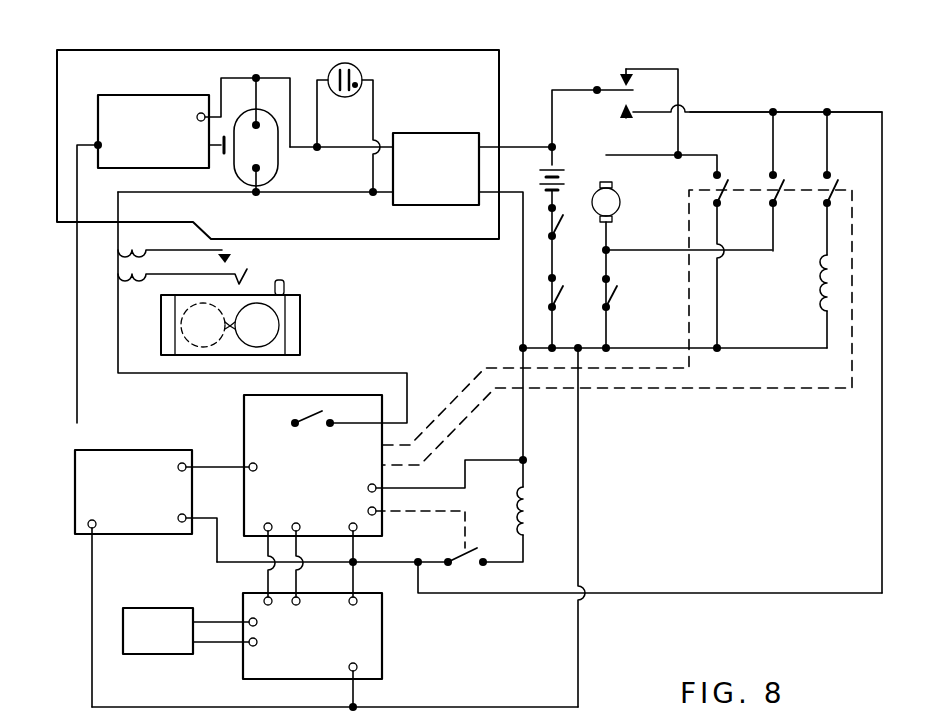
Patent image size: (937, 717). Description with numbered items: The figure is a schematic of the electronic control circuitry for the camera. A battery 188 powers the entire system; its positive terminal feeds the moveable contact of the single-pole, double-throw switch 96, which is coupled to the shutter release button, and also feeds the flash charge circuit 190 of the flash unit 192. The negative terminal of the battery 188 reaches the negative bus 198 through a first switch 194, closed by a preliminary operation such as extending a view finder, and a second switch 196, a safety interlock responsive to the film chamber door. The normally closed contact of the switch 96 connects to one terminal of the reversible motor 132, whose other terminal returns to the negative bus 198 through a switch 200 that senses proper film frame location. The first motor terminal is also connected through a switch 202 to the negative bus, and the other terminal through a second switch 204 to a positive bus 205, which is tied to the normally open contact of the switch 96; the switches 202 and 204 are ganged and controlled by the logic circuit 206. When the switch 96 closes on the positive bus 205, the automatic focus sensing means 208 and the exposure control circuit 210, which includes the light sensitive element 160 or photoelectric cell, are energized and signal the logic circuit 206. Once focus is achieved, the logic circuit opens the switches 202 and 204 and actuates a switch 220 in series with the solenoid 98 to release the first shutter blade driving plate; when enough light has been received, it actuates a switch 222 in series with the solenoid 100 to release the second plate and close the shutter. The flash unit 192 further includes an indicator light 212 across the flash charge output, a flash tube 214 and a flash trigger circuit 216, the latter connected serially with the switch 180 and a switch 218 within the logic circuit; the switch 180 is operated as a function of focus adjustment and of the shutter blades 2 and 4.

The flash unit 192 is at (375, 51).
The flash trigger circuit 216 is at (145, 95).
The indicator light 212 is at (375, 97).
The flash tube 214 is at (273, 181).
The flash charge circuit 190 is at (446, 133).
The single-pole, double-throw switch 96 is at (630, 62).
The battery 188 is at (564, 168).
The reversible motor 132 is at (619, 206).
The positive bus 205 is at (728, 112).
The switch 202 is at (728, 176).
The second switch 204 is at (782, 179).
The switch 220 is at (839, 180).
The solenoid 98 is at (820, 280).
The first switch 194 is at (559, 230).
The second switch 196 is at (555, 296).
The switch 200 is at (617, 290).
The negative bus 198 is at (732, 388).
The switch 180 is at (173, 275).
The shutter blade 4 is at (161, 337).
The shutter blade 2 is at (302, 302).
The logic circuit 206 is at (243, 405).
The switch 218 is at (310, 412).
The solenoid 100 is at (530, 498).
The switch 222 is at (457, 564).
The automatic focus sensing means 208 is at (178, 535).
The light sensitive element 160 is at (155, 654).
The exposure control circuit 210 is at (382, 650).